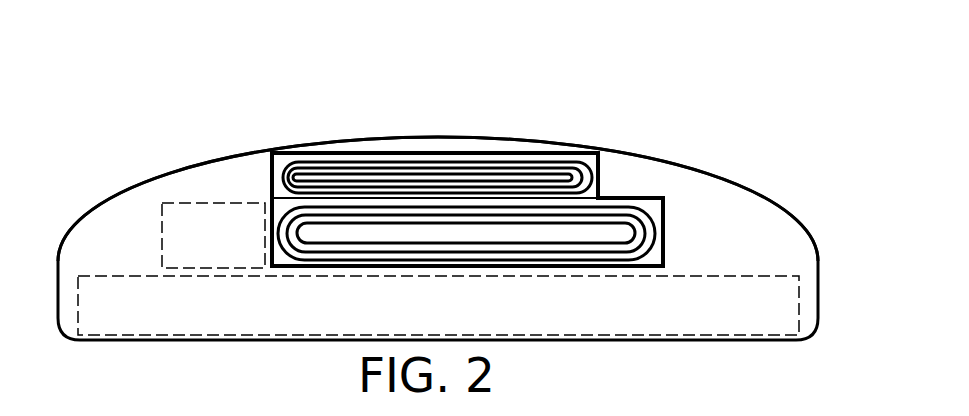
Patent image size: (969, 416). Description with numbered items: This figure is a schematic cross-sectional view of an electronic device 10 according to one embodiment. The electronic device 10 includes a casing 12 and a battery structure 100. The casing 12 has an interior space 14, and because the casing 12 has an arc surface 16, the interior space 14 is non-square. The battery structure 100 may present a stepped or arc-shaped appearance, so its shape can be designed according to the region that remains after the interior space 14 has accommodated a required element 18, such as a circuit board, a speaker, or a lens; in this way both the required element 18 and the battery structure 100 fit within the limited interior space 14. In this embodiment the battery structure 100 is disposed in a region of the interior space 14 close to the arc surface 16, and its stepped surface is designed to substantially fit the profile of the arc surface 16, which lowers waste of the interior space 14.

The electronic device 10 is at (136, 63).
The casing 12 is at (828, 296).
The interior space 14 is at (778, 262).
The arc surface 16 is at (665, 160).
The required element 18 is at (193, 203).
The battery structure 100 is at (446, 140).